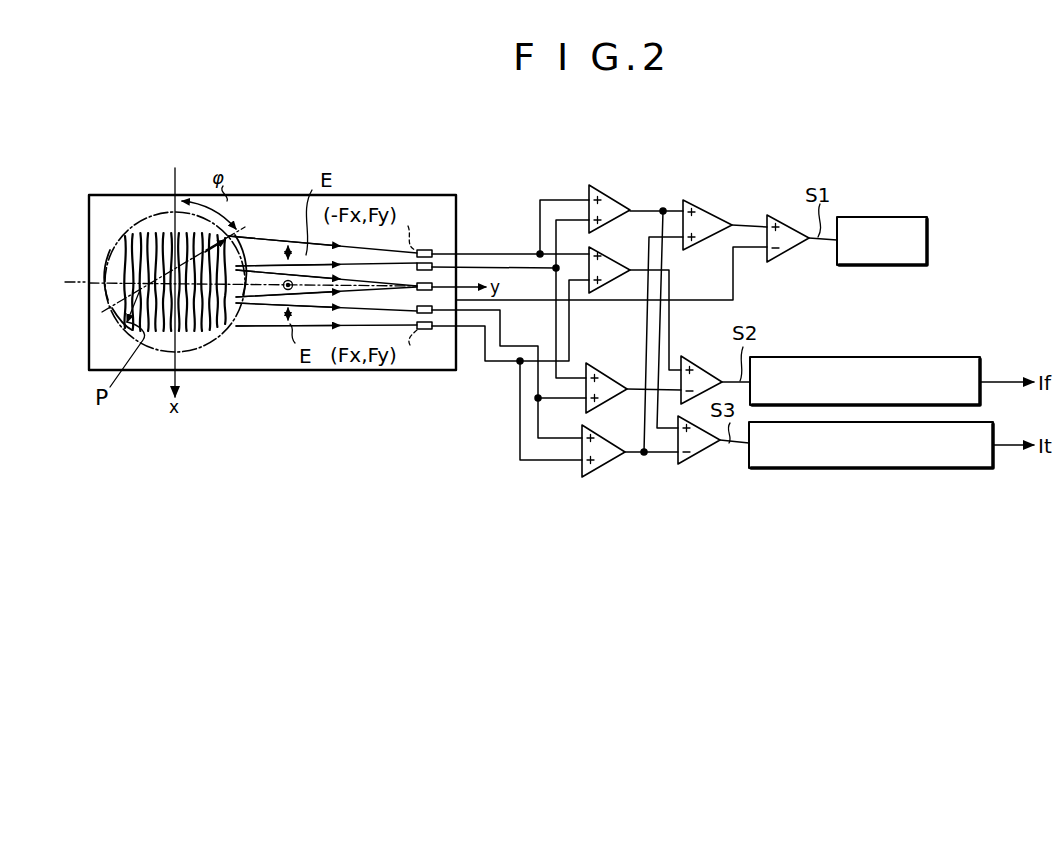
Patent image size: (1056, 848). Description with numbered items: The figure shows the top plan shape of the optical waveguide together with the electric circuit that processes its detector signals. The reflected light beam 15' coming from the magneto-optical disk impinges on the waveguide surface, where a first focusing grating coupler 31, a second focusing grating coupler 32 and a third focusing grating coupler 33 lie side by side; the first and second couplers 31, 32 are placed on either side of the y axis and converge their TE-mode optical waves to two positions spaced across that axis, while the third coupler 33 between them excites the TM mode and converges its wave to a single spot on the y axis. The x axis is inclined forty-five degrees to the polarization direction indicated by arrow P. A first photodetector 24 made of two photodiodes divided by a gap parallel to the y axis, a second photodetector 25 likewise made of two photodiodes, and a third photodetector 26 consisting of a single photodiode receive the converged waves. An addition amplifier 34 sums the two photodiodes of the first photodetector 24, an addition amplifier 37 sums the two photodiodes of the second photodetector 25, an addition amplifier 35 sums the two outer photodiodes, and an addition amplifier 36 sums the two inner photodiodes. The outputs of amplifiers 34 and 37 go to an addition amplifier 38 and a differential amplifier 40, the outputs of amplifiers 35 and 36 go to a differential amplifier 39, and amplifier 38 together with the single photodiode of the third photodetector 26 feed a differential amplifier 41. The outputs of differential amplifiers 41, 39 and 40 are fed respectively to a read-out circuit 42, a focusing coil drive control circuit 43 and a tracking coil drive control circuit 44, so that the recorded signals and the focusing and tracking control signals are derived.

The reflected light beam 15' is at (267, 253).
The first photodetector 24 is at (427, 248).
The second photodetector 25 is at (432, 313).
The third photodetector 26 is at (432, 287).
The first focusing grating coupler 31 is at (127, 247).
The second focusing grating coupler 32 is at (125, 313).
The third focusing grating coupler 33 is at (130, 273).
The addition amplifier 34 is at (620, 203).
The addition amplifier 35 is at (623, 266).
The addition amplifier 36 is at (613, 376).
The addition amplifier 37 is at (613, 449).
The addition amplifier 38 is at (711, 214).
The differential amplifier 39 is at (696, 365).
The differential amplifier 40 is at (701, 459).
The differential amplifier 41 is at (776, 220).
The read-out circuit 42 is at (896, 217).
The focusing coil drive control circuit 43 is at (914, 357).
The tracking coil drive control circuit 44 is at (858, 470).